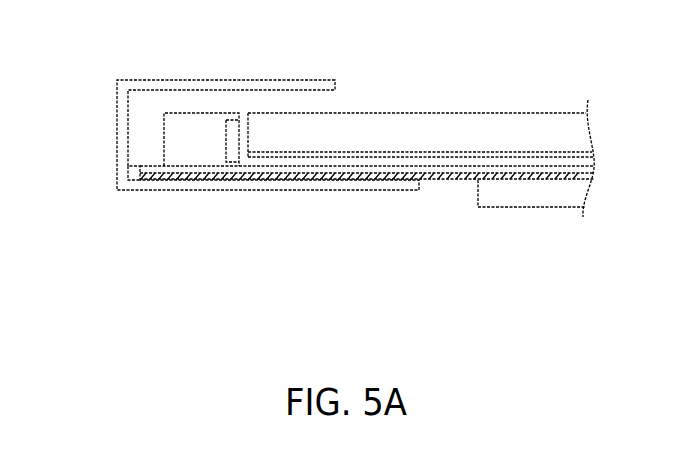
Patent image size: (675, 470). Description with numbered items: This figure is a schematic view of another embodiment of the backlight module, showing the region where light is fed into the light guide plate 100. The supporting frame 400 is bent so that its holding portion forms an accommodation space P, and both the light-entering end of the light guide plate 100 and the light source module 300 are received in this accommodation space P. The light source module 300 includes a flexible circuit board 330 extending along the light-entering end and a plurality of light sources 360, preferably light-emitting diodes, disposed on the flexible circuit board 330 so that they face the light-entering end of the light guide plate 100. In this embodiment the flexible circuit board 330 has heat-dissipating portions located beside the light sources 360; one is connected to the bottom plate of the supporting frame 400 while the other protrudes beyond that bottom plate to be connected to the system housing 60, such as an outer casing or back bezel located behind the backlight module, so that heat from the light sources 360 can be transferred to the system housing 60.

The supporting frame 400 is at (298, 78).
The light guide plate 100 is at (542, 122).
The system housing 60 is at (503, 197).
The light source module 300 is at (367, 212).
The flexible circuit board 330 is at (162, 170).
The light sources 360 is at (207, 147).
The accommodation space P is at (222, 104).